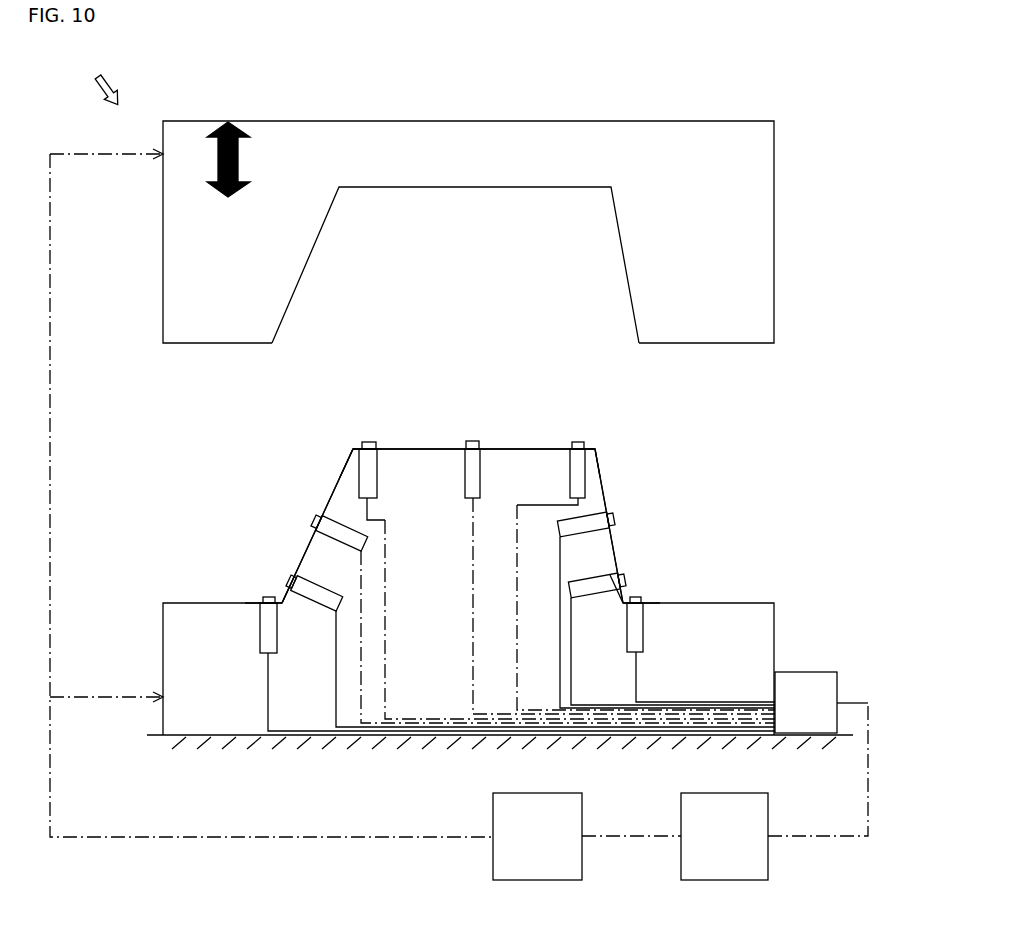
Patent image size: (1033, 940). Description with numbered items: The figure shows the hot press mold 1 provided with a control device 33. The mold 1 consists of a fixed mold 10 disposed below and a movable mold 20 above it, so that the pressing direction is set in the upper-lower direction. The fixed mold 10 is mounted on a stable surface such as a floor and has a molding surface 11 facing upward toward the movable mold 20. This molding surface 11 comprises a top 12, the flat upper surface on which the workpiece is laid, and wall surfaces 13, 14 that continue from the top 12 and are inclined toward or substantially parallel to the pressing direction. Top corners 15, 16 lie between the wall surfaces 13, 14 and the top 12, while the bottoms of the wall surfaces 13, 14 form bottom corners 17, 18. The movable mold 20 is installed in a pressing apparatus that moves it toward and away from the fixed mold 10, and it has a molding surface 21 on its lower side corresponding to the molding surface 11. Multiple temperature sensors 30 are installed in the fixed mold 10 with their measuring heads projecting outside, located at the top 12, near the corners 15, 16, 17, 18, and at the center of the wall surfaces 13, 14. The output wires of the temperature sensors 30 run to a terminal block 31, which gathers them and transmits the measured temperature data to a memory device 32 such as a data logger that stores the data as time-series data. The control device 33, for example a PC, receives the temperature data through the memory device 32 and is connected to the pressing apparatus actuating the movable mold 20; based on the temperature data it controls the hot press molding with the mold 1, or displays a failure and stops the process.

The mold 1 is at (101, 81).
The fixed mold 10 is at (163, 668).
The molding surface 11 is at (471, 398).
The top 12 is at (433, 449).
The wall surface 13 is at (332, 492).
The wall surface 14 is at (604, 490).
The top corner 15 is at (344, 445).
The top corner 16 is at (604, 450).
The bottom corner 17 is at (262, 585).
The bottom corner 18 is at (646, 585).
The movable mold 20 is at (163, 235).
The molding surface 21 is at (460, 225).
The temperature sensor 30 is at (378, 473).
The terminal block 31 is at (820, 720).
The memory device 32 is at (713, 853).
The control device 33 is at (525, 853).